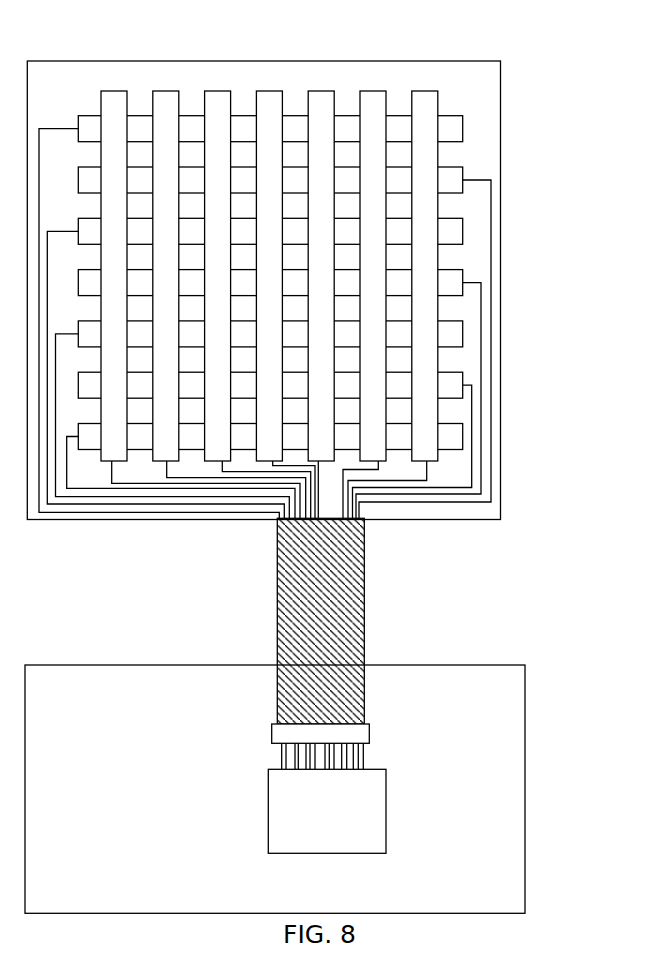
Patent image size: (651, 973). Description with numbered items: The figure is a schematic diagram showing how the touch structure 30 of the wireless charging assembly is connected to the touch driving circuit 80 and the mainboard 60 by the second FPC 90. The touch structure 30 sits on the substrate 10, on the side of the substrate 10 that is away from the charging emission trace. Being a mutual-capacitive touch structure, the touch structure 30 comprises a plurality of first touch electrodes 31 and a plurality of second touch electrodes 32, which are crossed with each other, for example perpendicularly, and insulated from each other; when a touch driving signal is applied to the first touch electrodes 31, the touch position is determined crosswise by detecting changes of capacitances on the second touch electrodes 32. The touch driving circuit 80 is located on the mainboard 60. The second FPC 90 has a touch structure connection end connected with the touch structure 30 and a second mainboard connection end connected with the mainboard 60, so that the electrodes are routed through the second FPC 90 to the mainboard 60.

The substrate 10 is at (485, 92).
The touch structure 30 is at (337, 276).
The first touch electrodes 31 is at (450, 127).
The second touch electrodes 32 is at (425, 157).
The mainboard 60 is at (508, 710).
The touch driving circuit 80 is at (372, 808).
The second FPC 90 is at (342, 588).